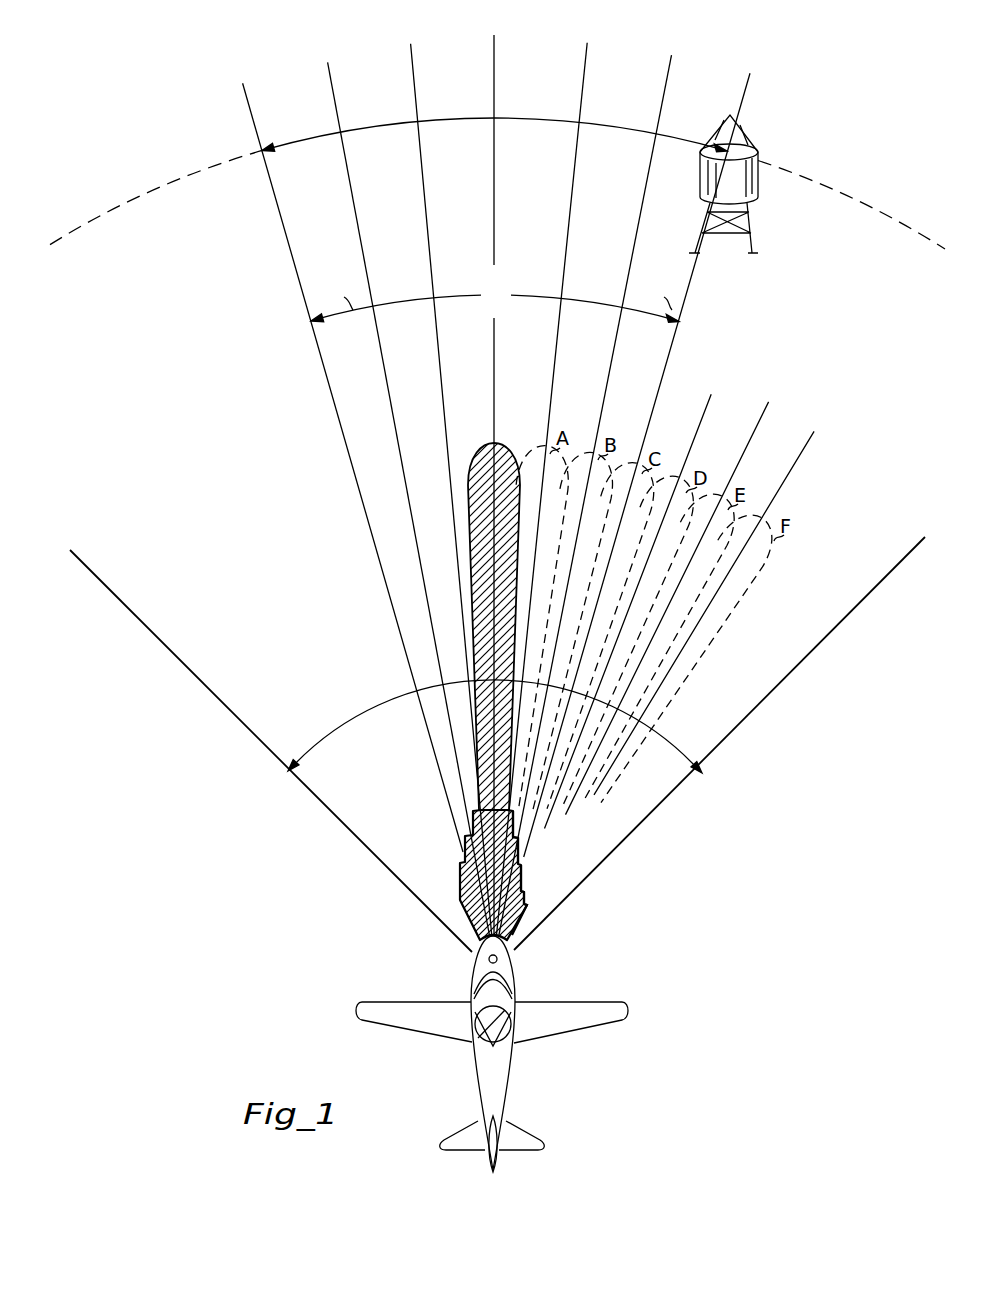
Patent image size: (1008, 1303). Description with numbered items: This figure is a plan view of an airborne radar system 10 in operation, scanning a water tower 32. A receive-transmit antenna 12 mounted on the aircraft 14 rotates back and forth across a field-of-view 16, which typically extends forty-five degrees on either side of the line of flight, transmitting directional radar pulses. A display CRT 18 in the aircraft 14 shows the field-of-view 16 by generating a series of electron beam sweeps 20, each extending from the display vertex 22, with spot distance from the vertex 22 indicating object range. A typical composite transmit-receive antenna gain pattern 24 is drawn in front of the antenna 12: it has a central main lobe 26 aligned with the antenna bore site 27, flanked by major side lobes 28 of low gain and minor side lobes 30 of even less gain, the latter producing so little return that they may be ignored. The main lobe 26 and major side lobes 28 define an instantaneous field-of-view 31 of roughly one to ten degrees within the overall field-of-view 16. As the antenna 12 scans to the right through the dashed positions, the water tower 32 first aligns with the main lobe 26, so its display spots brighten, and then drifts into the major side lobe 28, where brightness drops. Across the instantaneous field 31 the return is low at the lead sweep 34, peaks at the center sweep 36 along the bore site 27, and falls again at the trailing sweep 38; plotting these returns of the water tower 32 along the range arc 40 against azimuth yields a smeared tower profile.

The airborne radar system 10 is at (298, 959).
The receive-transmit antenna 12 is at (489, 959).
The aircraft 14 is at (477, 1094).
The field-of-view 16 is at (318, 745).
The display CRT 18 is at (512, 1040).
The electron beam sweeps 20 is at (512, 1002).
The display vertex 22 is at (480, 1042).
The composite transmit-receive antenna gain pattern 24 is at (466, 862).
The main lobe 26 is at (480, 446).
The antenna bore site 27 is at (494, 100).
The major side lobes 28 is at (520, 870).
The minor side lobes 30 is at (527, 905).
The instantaneous field-of-view 31 is at (578, 302).
The water tower 32 is at (760, 146).
The lead sweep 34 is at (740, 100).
The trail sweep 36 is at (498, 53).
The trailing sweep 38 is at (253, 126).
The range arc 40 is at (368, 123).